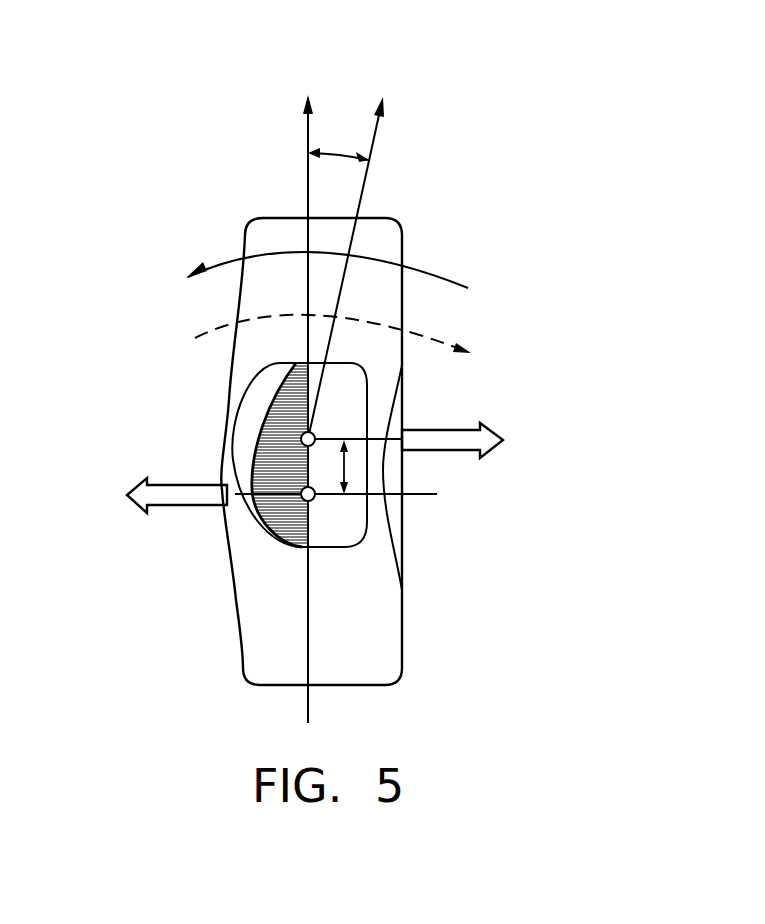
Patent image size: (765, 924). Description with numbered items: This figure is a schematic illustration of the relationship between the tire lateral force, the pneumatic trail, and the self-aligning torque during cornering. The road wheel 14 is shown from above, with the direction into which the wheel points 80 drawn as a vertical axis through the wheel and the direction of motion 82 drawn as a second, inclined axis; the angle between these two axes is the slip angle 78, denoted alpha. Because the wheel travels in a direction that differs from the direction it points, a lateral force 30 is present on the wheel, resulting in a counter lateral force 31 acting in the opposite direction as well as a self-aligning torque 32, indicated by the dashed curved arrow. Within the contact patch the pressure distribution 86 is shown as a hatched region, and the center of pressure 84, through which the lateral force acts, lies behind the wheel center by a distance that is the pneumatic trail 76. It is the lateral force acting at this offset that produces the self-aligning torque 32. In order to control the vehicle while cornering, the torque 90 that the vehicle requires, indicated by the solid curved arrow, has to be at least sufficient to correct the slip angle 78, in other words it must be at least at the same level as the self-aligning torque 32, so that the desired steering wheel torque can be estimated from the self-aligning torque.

The road wheel 14 is at (243, 672).
The lateral force 30 is at (458, 428).
The counter lateral force 31 is at (177, 485).
The self-aligning torque 32 is at (194, 334).
The pneumatic trail 76 is at (358, 467).
The slip angle 78 is at (335, 148).
The direction into which the wheel points 80 is at (308, 127).
The direction of motion 82 is at (375, 135).
The center of pressure 84 is at (320, 518).
The pressure distribution 86 is at (294, 524).
The torque 90 is at (440, 272).